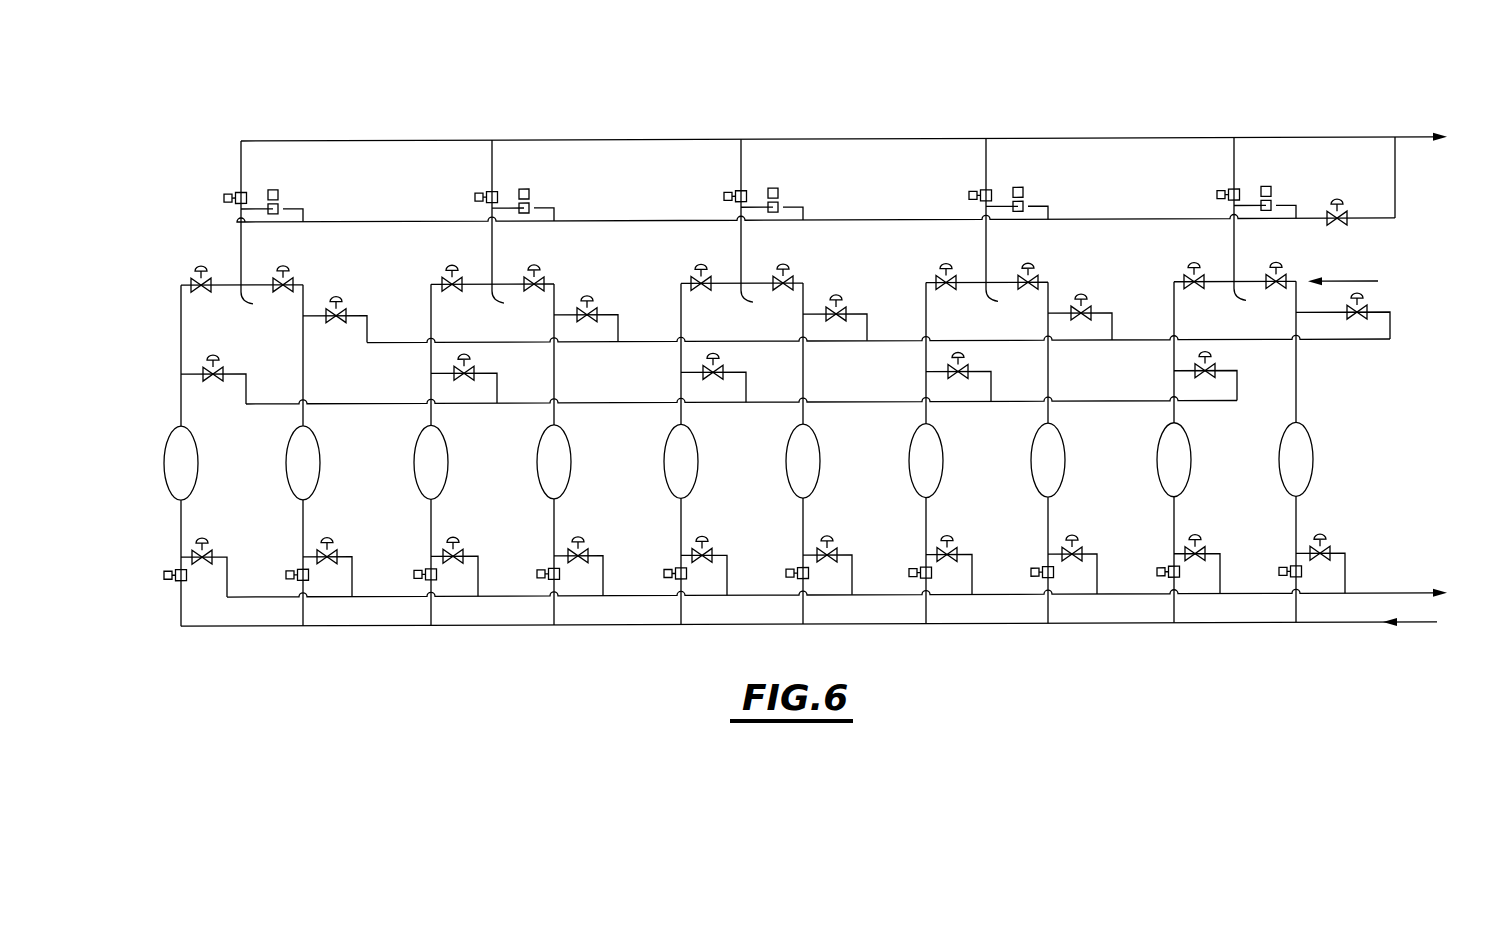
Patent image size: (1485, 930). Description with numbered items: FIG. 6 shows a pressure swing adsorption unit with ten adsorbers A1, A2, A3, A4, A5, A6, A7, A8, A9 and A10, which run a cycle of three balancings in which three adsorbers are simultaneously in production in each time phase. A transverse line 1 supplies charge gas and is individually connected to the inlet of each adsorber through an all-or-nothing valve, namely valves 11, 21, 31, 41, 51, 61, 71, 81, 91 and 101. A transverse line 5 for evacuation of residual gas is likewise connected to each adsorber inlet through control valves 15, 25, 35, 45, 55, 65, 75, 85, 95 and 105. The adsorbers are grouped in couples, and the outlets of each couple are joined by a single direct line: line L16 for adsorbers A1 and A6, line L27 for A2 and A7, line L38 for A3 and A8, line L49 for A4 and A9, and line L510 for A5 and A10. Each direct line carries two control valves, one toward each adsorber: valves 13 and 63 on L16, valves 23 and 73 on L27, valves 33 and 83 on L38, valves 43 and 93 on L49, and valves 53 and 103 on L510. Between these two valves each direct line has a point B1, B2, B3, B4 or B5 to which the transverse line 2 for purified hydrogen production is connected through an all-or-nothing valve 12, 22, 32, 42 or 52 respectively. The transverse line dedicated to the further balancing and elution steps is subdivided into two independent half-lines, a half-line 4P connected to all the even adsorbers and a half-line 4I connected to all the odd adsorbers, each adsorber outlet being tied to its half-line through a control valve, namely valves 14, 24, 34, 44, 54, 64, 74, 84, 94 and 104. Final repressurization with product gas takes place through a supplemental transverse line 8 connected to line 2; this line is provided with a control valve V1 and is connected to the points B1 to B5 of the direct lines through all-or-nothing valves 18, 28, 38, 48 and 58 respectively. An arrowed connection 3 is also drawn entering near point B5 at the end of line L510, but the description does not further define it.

The transverse line 1 is at (1260, 627).
The transverse line 2 is at (1325, 139).
The purge gas line 3 is at (1351, 278).
The transverse line 5 is at (1383, 597).
The supplemental transverse line 8 is at (1395, 185).
The valve TOR 11 is at (168, 582).
The valve TOR 12 is at (223, 197).
The control valve 13 is at (199, 268).
The control valve 14 is at (215, 382).
The control valve 15 is at (204, 543).
The TOR valve 18 is at (283, 195).
The valve TOR 21 is at (418, 569).
The valve TOR 22 is at (474, 197).
The control valve 23 is at (451, 270).
The control valve 24 is at (466, 382).
The control valve 25 is at (455, 543).
The TOR valve 28 is at (534, 195).
The valve TOR 31 is at (668, 569).
The valve TOR 32 is at (723, 197).
The control valve 33 is at (700, 270).
The control valve 34 is at (715, 382).
The control valve 35 is at (704, 543).
The TOR valve 38 is at (783, 195).
The valve TOR 41 is at (913, 569).
The valve TOR 42 is at (968, 197).
The control valve 43 is at (945, 270).
The control valve 44 is at (960, 382).
The control valve 45 is at (949, 543).
The TOR valve 48 is at (1028, 195).
The valve TOR 51 is at (1161, 569).
The valve TOR 52 is at (1216, 197).
The control valve 53 is at (1193, 270).
The control valve 54 is at (1207, 382).
The control valve 55 is at (1197, 540).
The TOR valve 58 is at (1276, 195).
The valve TOR 61 is at (290, 569).
The control valve 63 is at (287, 270).
The control valve 64 is at (338, 303).
The control valve 65 is at (329, 543).
The valve TOR 71 is at (541, 569).
The control valve 73 is at (538, 270).
The control valve 74 is at (589, 303).
The control valve 75 is at (580, 543).
The valve TOR 81 is at (790, 569).
The control valve 83 is at (787, 270).
The control valve 84 is at (838, 303).
The control valve 85 is at (829, 543).
The valve TOR 91 is at (1035, 569).
The control valve 93 is at (1032, 270).
The control valve 94 is at (1083, 303).
The control valve 95 is at (1074, 543).
The valve TOR 101 is at (1283, 569).
The control valve 103 is at (1278, 269).
The control valve 104 is at (1360, 302).
The control valve 105 is at (1322, 540).
The control valve V1 is at (1341, 210).
The half-line 4P is at (1335, 344).
The half-line 4I is at (1082, 405).
The direct line L16 is at (181, 311).
The direct line L27 is at (431, 362).
The direct line L38 is at (681, 362).
The direct line L49 is at (926, 362).
The direct line L510 is at (1174, 362).
The point B1 is at (261, 234).
The point B2 is at (512, 233).
The point B3 is at (761, 232).
The point B4 is at (1006, 231).
The point B5 is at (1254, 230).
The adsorber A1 is at (181, 463).
The adsorber A2 is at (431, 462).
The adsorber A3 is at (681, 461).
The adsorber A4 is at (926, 461).
The adsorber A5 is at (1174, 460).
The adsorber A6 is at (303, 463).
The adsorber A7 is at (554, 462).
The adsorber A8 is at (803, 461).
The adsorber A9 is at (1048, 460).
The adsorber A10 is at (1298, 459).